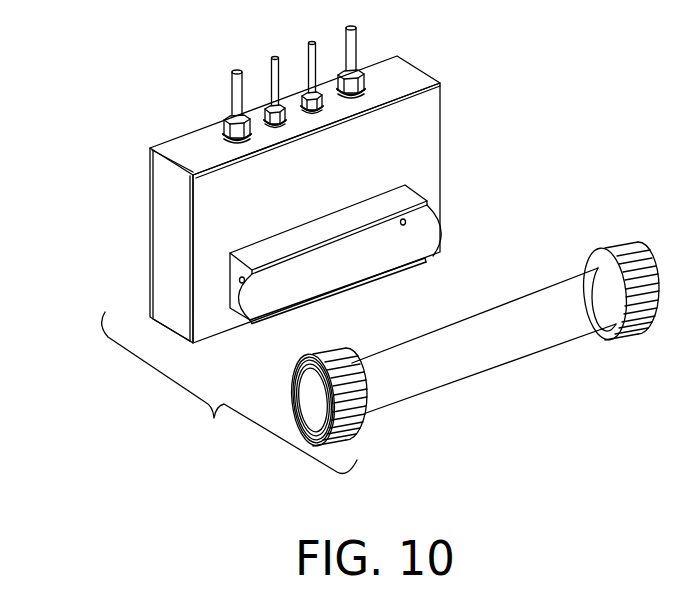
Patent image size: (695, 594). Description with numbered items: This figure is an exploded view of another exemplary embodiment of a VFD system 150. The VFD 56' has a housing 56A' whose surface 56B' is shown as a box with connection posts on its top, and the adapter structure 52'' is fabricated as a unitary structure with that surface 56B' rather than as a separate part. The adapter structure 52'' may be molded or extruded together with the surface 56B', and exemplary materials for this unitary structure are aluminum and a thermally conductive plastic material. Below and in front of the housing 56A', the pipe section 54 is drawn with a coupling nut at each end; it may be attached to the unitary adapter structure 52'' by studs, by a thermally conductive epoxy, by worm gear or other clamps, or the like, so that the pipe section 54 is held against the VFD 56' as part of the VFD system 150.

The VFD 56' is at (345, 102).
The housing 56A' is at (112, 245).
The surface 56B' is at (316, 213).
The adapter structure 52'' is at (375, 244).
The pipe section 54 is at (488, 357).
The VFD system 150 is at (229, 393).